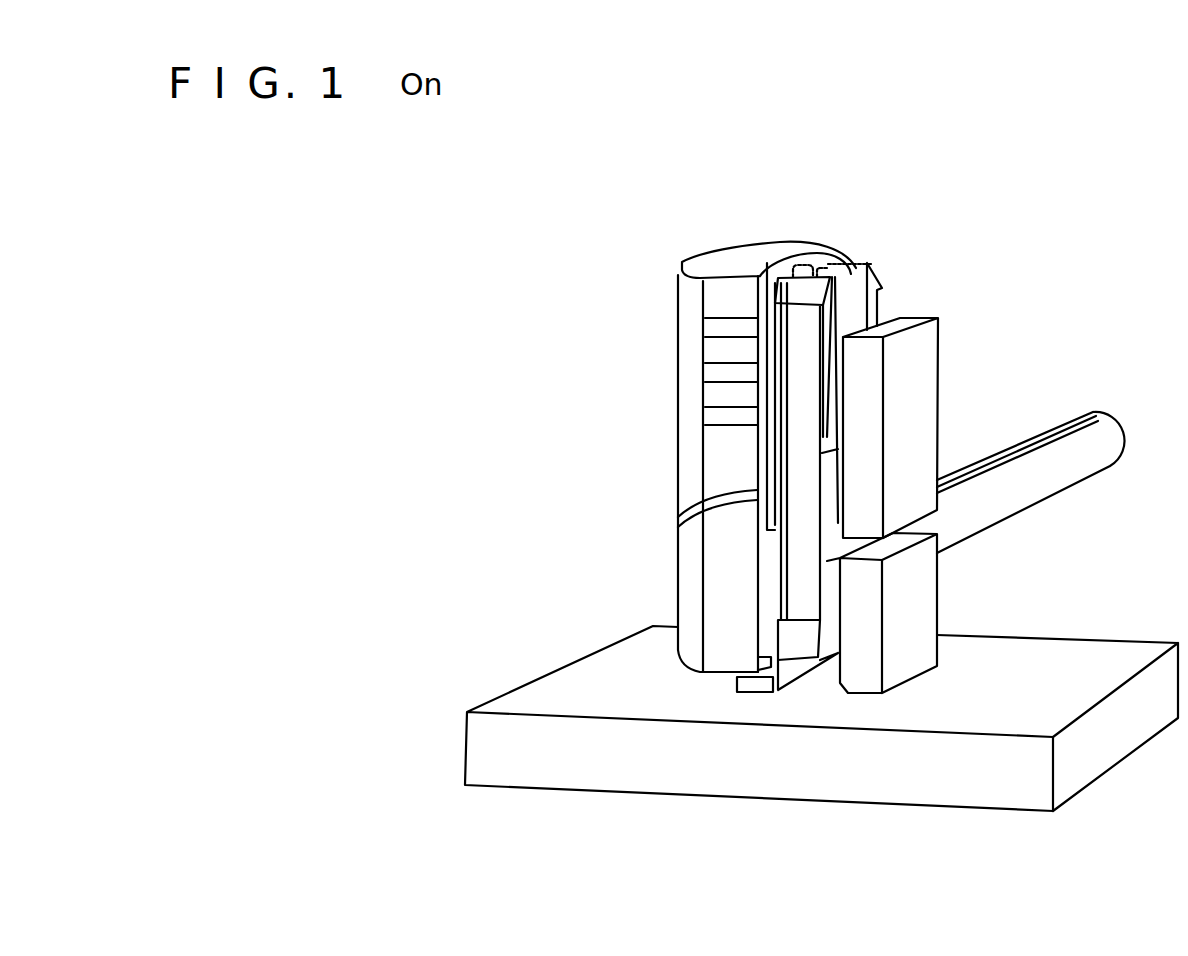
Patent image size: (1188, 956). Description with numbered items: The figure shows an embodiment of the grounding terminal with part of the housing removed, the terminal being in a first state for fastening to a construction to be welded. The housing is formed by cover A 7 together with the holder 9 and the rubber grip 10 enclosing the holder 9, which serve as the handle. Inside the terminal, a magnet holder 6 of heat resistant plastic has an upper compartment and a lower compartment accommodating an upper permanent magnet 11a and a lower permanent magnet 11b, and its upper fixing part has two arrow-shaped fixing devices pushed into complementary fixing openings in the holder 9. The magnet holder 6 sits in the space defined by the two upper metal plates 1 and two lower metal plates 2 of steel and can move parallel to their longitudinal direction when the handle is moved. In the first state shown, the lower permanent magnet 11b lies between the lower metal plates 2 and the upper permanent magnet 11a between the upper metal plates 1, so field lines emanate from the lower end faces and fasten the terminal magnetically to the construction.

The upper metal plates 1 is at (757, 530).
The lower metal plates 2 is at (937, 572).
The magnet holder 6 is at (805, 425).
The cover A 7 is at (668, 591).
The holder 9 is at (678, 298).
The rubber grip 10 is at (714, 250).
The upper permanent magnet 11a is at (832, 470).
The lower permanent magnet 11b is at (833, 597).